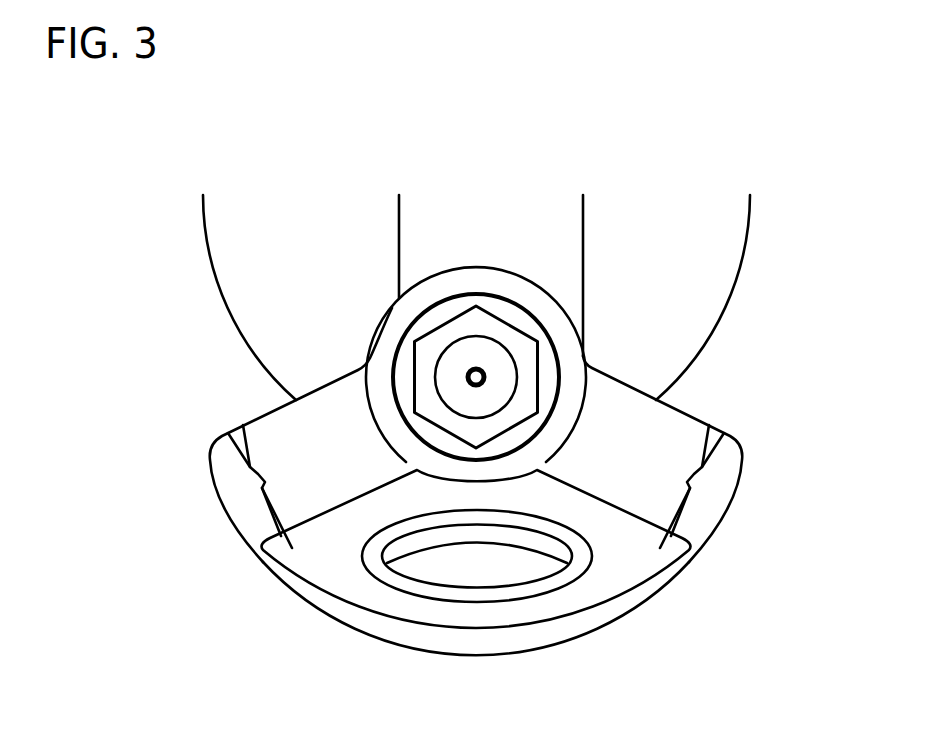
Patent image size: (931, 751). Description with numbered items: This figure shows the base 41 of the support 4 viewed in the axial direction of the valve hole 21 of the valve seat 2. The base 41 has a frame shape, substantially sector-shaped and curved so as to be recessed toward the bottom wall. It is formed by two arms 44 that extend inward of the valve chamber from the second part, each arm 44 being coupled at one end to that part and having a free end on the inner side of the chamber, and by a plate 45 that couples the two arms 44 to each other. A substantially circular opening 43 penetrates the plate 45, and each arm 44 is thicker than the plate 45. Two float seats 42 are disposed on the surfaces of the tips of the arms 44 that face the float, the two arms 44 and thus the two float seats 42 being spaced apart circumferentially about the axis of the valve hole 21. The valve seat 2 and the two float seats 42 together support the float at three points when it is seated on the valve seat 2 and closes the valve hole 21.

The valve seat 2 is at (442, 357).
The valve hole 21 is at (487, 373).
The support 4 is at (735, 594).
The base 41 is at (268, 562).
The float seat 42 is at (268, 477).
The opening 43 is at (483, 563).
The arm 44 is at (315, 507).
The plate 45 is at (532, 635).